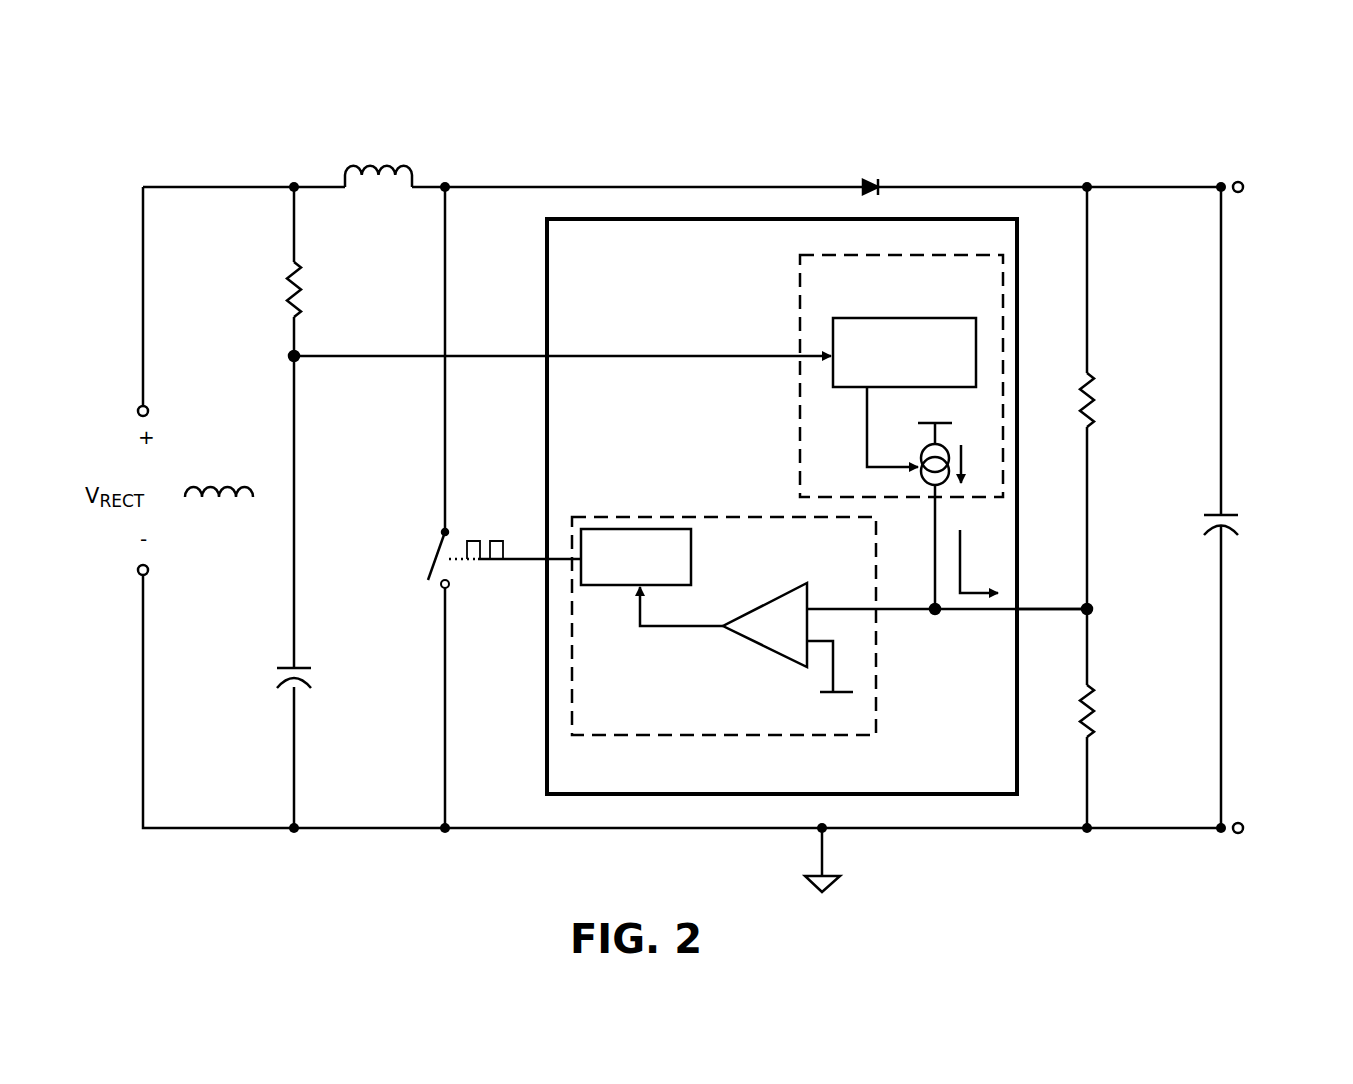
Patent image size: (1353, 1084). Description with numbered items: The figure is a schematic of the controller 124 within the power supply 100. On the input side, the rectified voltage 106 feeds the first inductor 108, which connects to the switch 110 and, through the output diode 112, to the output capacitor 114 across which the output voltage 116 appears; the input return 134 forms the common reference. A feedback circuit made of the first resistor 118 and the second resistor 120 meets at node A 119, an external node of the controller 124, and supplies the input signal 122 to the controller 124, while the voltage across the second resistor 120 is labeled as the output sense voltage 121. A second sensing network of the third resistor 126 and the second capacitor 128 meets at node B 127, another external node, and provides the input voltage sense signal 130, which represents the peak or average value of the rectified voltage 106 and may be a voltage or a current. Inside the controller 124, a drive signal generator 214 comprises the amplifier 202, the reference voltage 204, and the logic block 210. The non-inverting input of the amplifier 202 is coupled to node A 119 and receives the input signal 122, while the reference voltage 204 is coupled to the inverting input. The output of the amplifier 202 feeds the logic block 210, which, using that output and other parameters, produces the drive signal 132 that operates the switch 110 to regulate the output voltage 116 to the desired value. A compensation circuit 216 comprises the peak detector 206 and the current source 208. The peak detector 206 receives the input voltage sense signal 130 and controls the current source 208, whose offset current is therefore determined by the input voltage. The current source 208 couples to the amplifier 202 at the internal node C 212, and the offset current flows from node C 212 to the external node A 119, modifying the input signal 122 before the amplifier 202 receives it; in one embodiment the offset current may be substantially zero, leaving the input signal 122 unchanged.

The power supply 100 is at (1112, 86).
The rectified voltage V_RECT 106 is at (170, 510).
The inductor L1 108 is at (362, 146).
The switch S1 110 is at (432, 533).
The output diode D1 112 is at (873, 155).
The output capacitor C1 114 is at (1182, 505).
The output voltage V_O 116 is at (1300, 481).
The resistor R1 118 is at (1112, 392).
The node A 119 is at (1110, 598).
The resistor R2 120 is at (1068, 686).
The output sense voltage VOSENSE 121 is at (1170, 684).
The input signal 122 is at (1053, 608).
The controller 124 is at (690, 506).
The resistor R3 126 is at (312, 287).
The node B 127 is at (270, 378).
The capacitor C2 128 is at (262, 660).
The input voltage sense signal U_INSENSE 130 is at (650, 300).
The drive signal 132 is at (478, 530).
The input return 134 is at (847, 868).
The amplifier 202 is at (736, 636).
The reference voltage V_REF 204 is at (770, 713).
The peak detector 206 is at (898, 310).
The current source 208 is at (945, 437).
The logic block 210 is at (698, 556).
The node C 212 is at (940, 632).
The drive signal generator 214 is at (690, 513).
The compensation circuit 216 is at (798, 290).